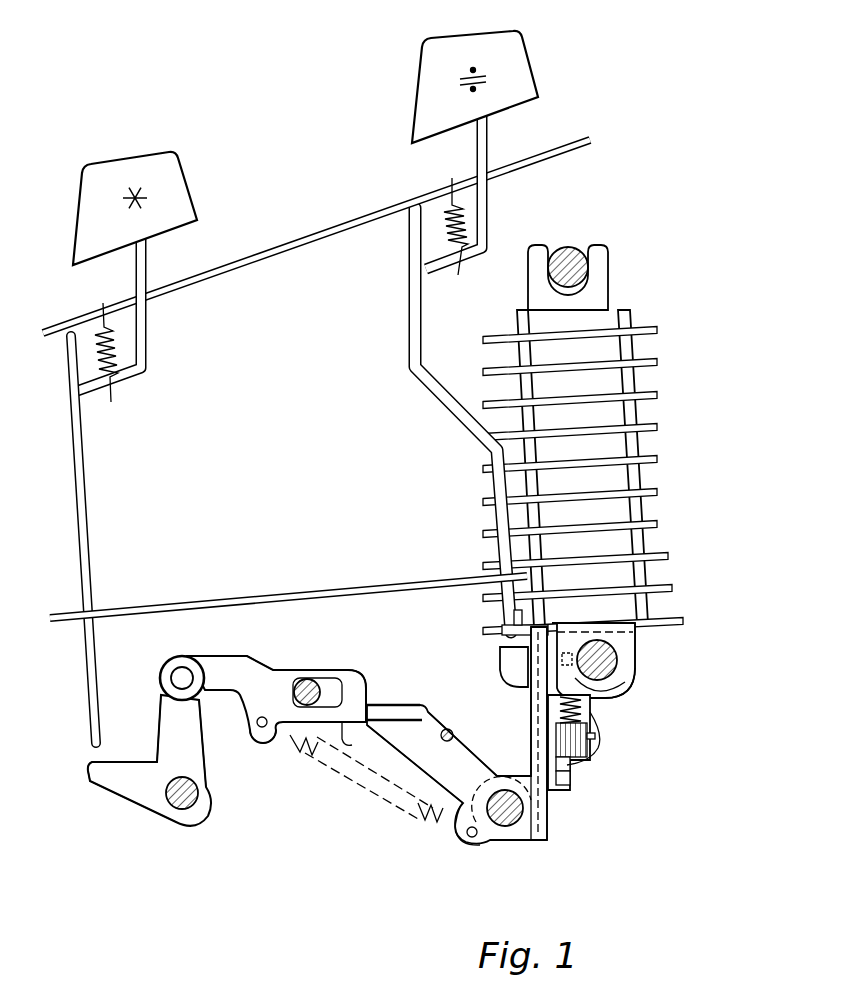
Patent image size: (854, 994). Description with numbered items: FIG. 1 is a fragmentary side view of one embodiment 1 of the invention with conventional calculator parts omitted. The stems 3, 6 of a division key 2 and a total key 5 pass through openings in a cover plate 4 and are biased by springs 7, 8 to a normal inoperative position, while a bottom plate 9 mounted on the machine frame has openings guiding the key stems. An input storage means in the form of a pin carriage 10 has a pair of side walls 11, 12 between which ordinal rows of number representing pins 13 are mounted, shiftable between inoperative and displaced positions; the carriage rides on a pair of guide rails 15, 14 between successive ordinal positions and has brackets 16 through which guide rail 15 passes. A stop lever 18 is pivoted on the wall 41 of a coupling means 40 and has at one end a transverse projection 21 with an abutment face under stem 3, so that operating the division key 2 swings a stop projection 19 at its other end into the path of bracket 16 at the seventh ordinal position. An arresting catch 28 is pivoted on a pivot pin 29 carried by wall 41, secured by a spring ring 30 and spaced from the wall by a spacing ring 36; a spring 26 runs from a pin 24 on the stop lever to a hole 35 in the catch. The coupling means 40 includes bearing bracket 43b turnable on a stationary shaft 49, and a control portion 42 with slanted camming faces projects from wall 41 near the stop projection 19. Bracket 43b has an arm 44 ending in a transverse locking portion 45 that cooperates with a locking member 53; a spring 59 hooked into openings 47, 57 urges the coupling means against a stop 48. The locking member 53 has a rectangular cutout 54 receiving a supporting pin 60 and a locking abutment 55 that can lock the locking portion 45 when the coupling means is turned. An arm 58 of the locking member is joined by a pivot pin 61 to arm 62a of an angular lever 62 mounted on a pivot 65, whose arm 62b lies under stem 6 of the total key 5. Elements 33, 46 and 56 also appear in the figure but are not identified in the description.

The switching mechanism 1 is at (283, 118).
The division key 2 is at (512, 82).
The stem 3 is at (421, 324).
The cover plate 4 is at (341, 222).
The total key 5 is at (183, 196).
The stem 6 is at (87, 493).
The spring 7 is at (462, 223).
The spring 8 is at (112, 347).
The bottom plate 9 is at (321, 597).
The pin carriage 10 is at (601, 481).
The side wall 11 is at (528, 362).
The side wall 12 is at (630, 352).
The number representing pins 13 is at (650, 490).
The guide rail 14 is at (570, 255).
The guide rail 15 is at (634, 664).
The bracket 16 is at (632, 683).
The stop lever 18 is at (518, 630).
The stop projection 19 is at (610, 764).
The transverse projection 21 is at (505, 662).
The pin 24 is at (618, 682).
The spring 26 is at (620, 688).
The arresting catch 28 is at (590, 742).
The pivot pin 29 is at (575, 768).
The spring ring 30 is at (566, 785).
The cam surface 33 is at (593, 760).
The hole 35 is at (598, 738).
The spacing ring 36 is at (553, 797).
The coupling means 40 is at (500, 763).
The wall 41 is at (536, 724).
The control portion 42 is at (610, 645).
The bearing bracket 43b is at (535, 842).
The arm 44 is at (466, 778).
The locking portion 45 is at (385, 708).
The lever lobe 46 is at (474, 845).
The opening 47 is at (468, 843).
The stop 48 is at (447, 730).
The stationary shaft 49 is at (507, 828).
The locking member 53 is at (284, 699).
The rectangular cutout 54 is at (335, 690).
The locking abutment 55 is at (349, 740).
The notch 56 is at (266, 740).
The opening 57 is at (258, 725).
The arm 58 is at (222, 658).
The spring 59 is at (342, 778).
The supporting pin 60 is at (307, 688).
The pivot pin 61 is at (178, 662).
The angular lever 62 is at (150, 761).
The arm 62a is at (172, 700).
The arm 62b is at (125, 785).
The pivot 65 is at (186, 810).